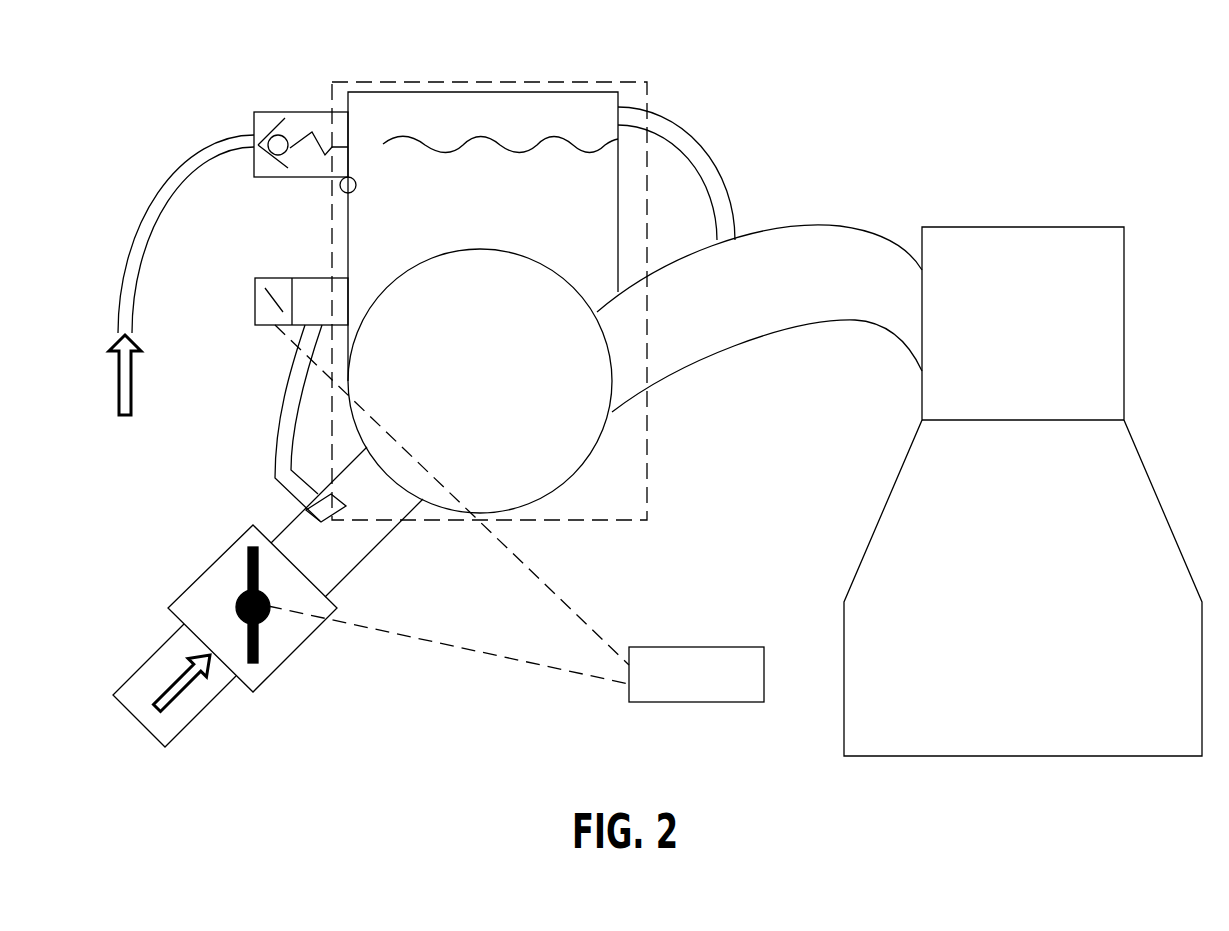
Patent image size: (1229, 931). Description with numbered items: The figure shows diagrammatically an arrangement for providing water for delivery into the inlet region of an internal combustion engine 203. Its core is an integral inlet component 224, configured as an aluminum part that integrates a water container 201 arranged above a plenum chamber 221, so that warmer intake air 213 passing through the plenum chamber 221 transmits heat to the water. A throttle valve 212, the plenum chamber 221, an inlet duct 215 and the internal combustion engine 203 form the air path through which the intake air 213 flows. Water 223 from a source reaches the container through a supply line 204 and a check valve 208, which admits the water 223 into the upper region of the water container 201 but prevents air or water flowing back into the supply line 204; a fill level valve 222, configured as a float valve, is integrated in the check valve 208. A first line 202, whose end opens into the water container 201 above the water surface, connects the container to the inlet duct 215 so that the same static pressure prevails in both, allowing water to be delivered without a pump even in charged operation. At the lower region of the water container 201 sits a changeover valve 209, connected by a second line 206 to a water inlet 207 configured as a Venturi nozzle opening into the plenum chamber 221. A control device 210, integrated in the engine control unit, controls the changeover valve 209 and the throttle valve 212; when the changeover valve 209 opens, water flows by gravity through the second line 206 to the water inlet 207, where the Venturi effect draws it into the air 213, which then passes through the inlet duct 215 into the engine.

The water container 201 is at (618, 97).
The first line 202 is at (698, 138).
The internal combustion engine 203 is at (1020, 227).
The supply line 204 is at (162, 195).
The second line 206 is at (277, 433).
The water inlet 207 is at (363, 552).
The check valve 208 is at (312, 112).
The changeover valve 209 is at (263, 307).
The control device 210 is at (764, 681).
The throttle valve 212 is at (298, 632).
The intake air 213 is at (188, 692).
The inlet duct 215 is at (698, 329).
The plenum chamber 221 is at (490, 445).
The fill level valve 222 is at (357, 180).
The water 223 is at (133, 377).
The integral inlet component 224 is at (512, 82).